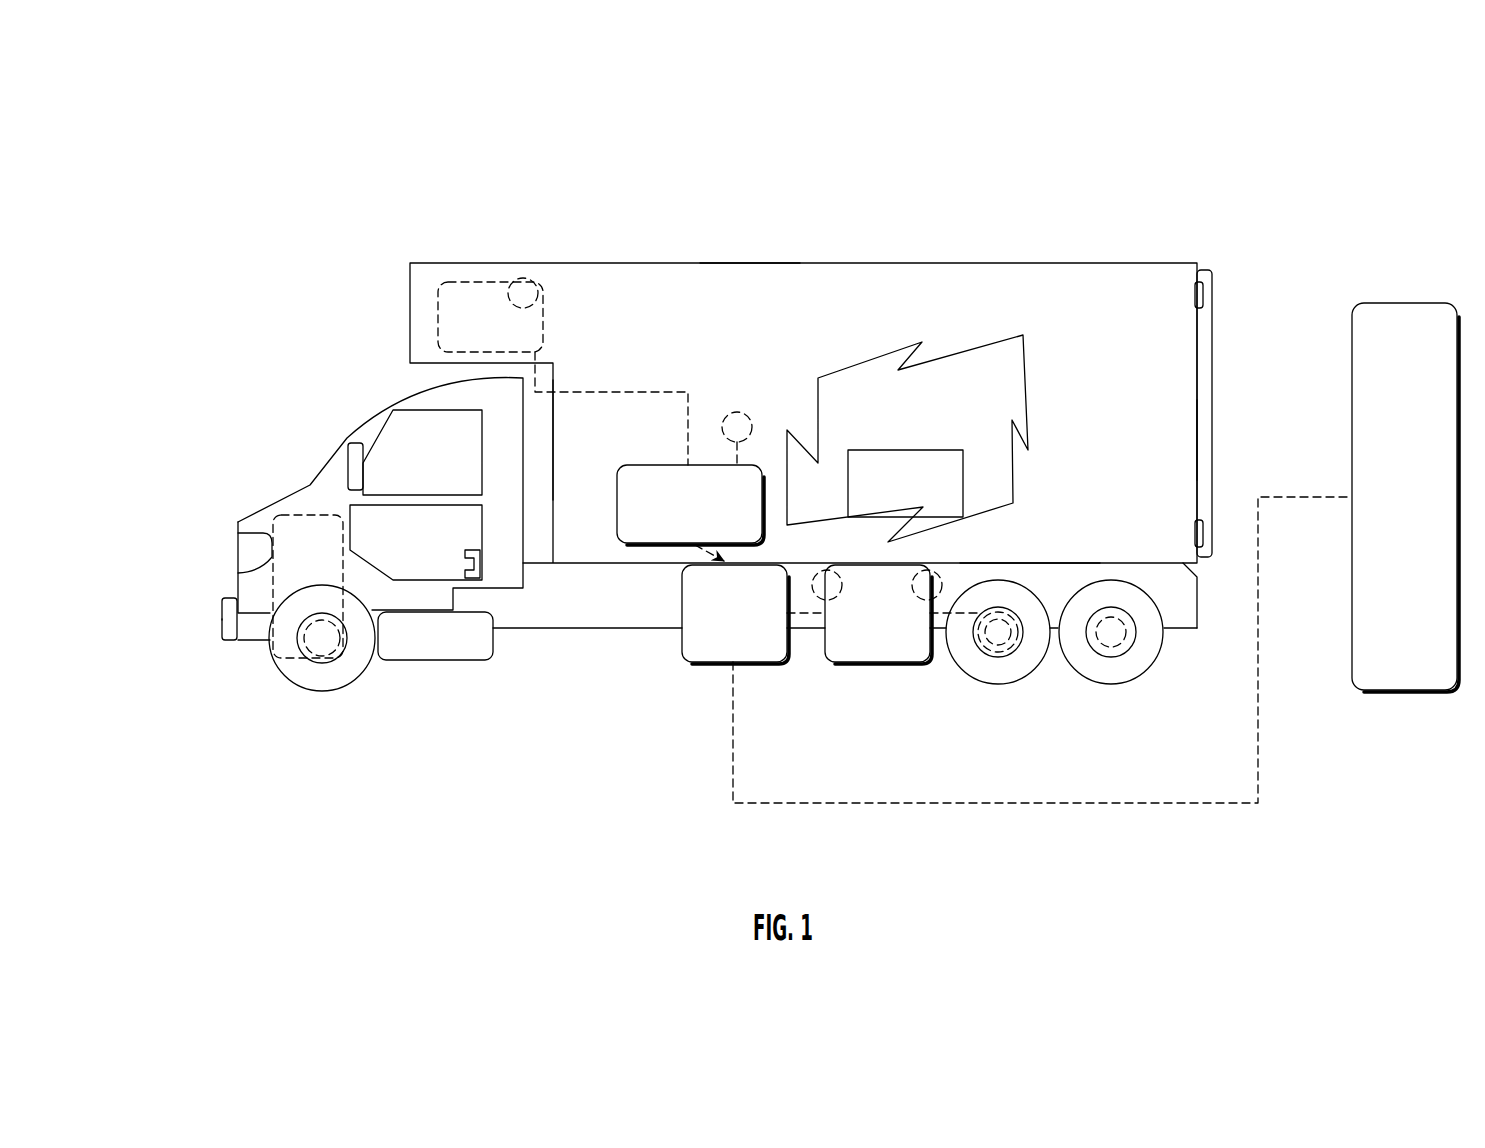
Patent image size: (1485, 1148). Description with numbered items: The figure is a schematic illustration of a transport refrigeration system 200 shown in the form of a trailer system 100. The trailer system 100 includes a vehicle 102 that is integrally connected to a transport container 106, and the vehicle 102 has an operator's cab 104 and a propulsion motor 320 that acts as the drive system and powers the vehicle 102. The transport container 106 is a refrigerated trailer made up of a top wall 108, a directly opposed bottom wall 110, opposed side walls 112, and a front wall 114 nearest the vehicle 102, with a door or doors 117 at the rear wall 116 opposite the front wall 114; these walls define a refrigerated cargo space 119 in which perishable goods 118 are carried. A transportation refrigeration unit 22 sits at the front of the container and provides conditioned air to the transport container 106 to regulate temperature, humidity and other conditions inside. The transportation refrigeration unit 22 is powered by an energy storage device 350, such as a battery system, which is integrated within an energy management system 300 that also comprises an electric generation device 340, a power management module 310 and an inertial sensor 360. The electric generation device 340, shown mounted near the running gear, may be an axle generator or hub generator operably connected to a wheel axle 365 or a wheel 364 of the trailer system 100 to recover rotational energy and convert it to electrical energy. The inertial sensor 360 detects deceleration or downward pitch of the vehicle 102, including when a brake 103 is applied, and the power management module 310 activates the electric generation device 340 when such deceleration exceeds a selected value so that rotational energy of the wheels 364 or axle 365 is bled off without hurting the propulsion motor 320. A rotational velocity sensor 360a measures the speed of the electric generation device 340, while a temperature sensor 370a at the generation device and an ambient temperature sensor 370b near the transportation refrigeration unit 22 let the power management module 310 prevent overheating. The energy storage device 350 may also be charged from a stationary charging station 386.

The trailer system 100 is at (420, 114).
The vehicle 102 is at (247, 642).
The cab 104 is at (393, 460).
The transport container 106 is at (922, 277).
The top wall 108 is at (750, 263).
The bottom wall 110 is at (1027, 565).
The side walls 112 is at (820, 322).
The front wall 114 is at (555, 435).
The rear wall 116 is at (1193, 350).
The doors 117 is at (1203, 422).
The perishable goods 118 is at (899, 497).
The refrigerated cargo space 119 is at (995, 396).
The transportation refrigeration unit 22 is at (468, 282).
The transport refrigeration system 200 is at (543, 226).
The energy management system 300 is at (1319, 884).
The power management module 310 is at (627, 465).
The propulsion motor 320 is at (292, 513).
The electric generation device 340 is at (887, 665).
The energy storage device 350 is at (785, 662).
The inertial sensor 360 is at (728, 418).
The rotational velocity sensor 360a is at (830, 570).
The temperature sensor 370a is at (935, 568).
The ambient temperature sensor 370b is at (532, 280).
The wheel 364 is at (1045, 658).
The axle 365 is at (1002, 648).
The brake 103 is at (982, 642).
The charging station 386 is at (1408, 695).